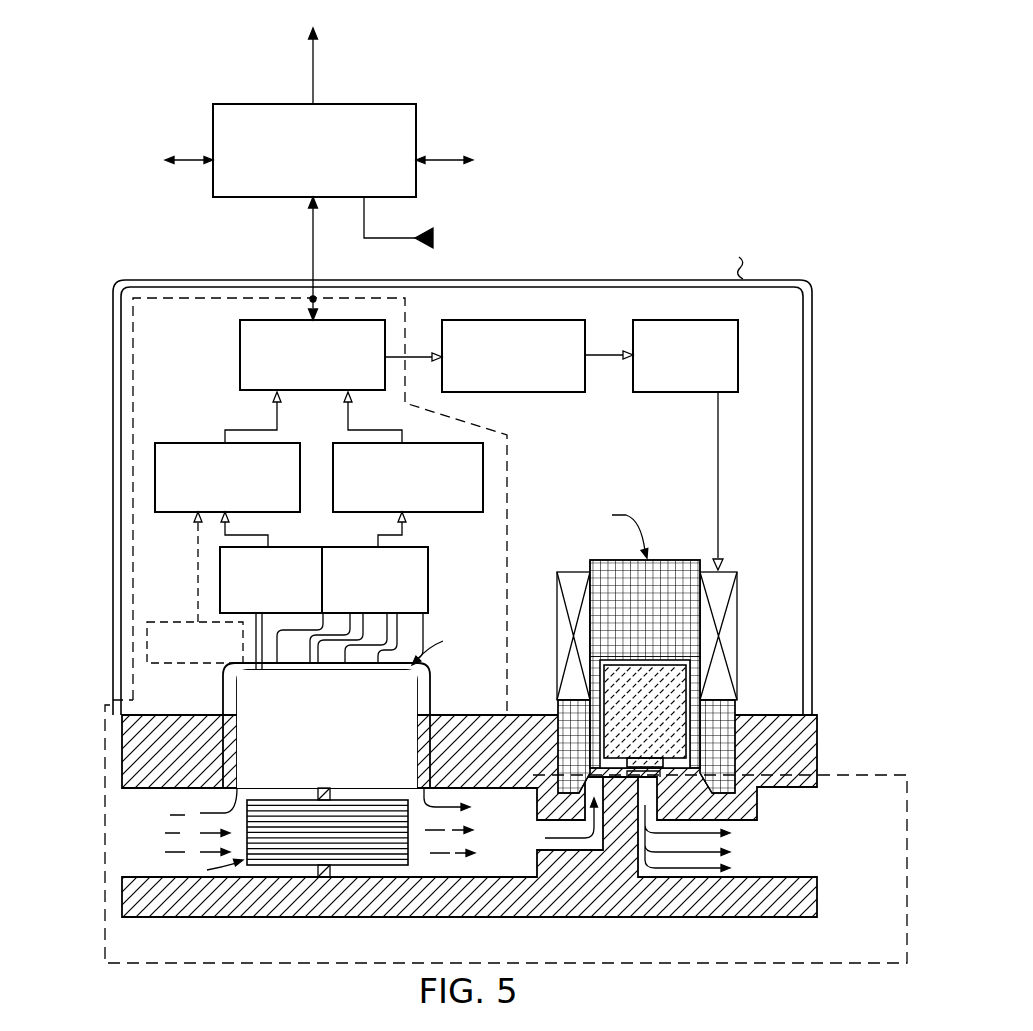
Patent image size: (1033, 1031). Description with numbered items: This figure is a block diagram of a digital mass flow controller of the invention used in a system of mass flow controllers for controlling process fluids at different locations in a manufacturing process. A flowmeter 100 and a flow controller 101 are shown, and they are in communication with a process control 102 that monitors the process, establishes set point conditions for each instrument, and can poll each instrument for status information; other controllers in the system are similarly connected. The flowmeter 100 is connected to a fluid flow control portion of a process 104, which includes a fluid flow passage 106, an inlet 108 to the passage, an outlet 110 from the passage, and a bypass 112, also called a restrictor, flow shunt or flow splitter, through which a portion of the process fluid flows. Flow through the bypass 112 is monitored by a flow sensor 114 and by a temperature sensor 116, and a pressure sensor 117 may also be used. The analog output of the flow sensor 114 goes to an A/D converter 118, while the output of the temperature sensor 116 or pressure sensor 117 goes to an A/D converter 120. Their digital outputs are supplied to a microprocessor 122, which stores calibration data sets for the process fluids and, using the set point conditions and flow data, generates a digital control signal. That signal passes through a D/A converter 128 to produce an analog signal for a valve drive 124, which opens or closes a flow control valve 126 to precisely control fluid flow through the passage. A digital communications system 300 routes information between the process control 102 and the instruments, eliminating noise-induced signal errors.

The flowmeter 100 is at (732, 970).
The flow controller 101 is at (632, 240).
The process control 102 is at (406, 132).
The process 104 is at (234, 930).
The fluid flow passage 106 is at (510, 841).
The inlet 108 is at (122, 852).
The outlet 110 is at (817, 811).
The bypass 112 is at (223, 689).
The flow sensor 114 is at (428, 573).
The temperature sensor 116 is at (220, 580).
The pressure sensor 117 is at (147, 633).
The A/D converter 118 is at (483, 462).
The A/D converter 120 is at (178, 513).
The microprocessor 122 is at (240, 334).
The valve drive 124 is at (738, 372).
The flow control valve 126 is at (679, 557).
The D/A converter 128 is at (545, 392).
The digital communications system 300 is at (312, 247).